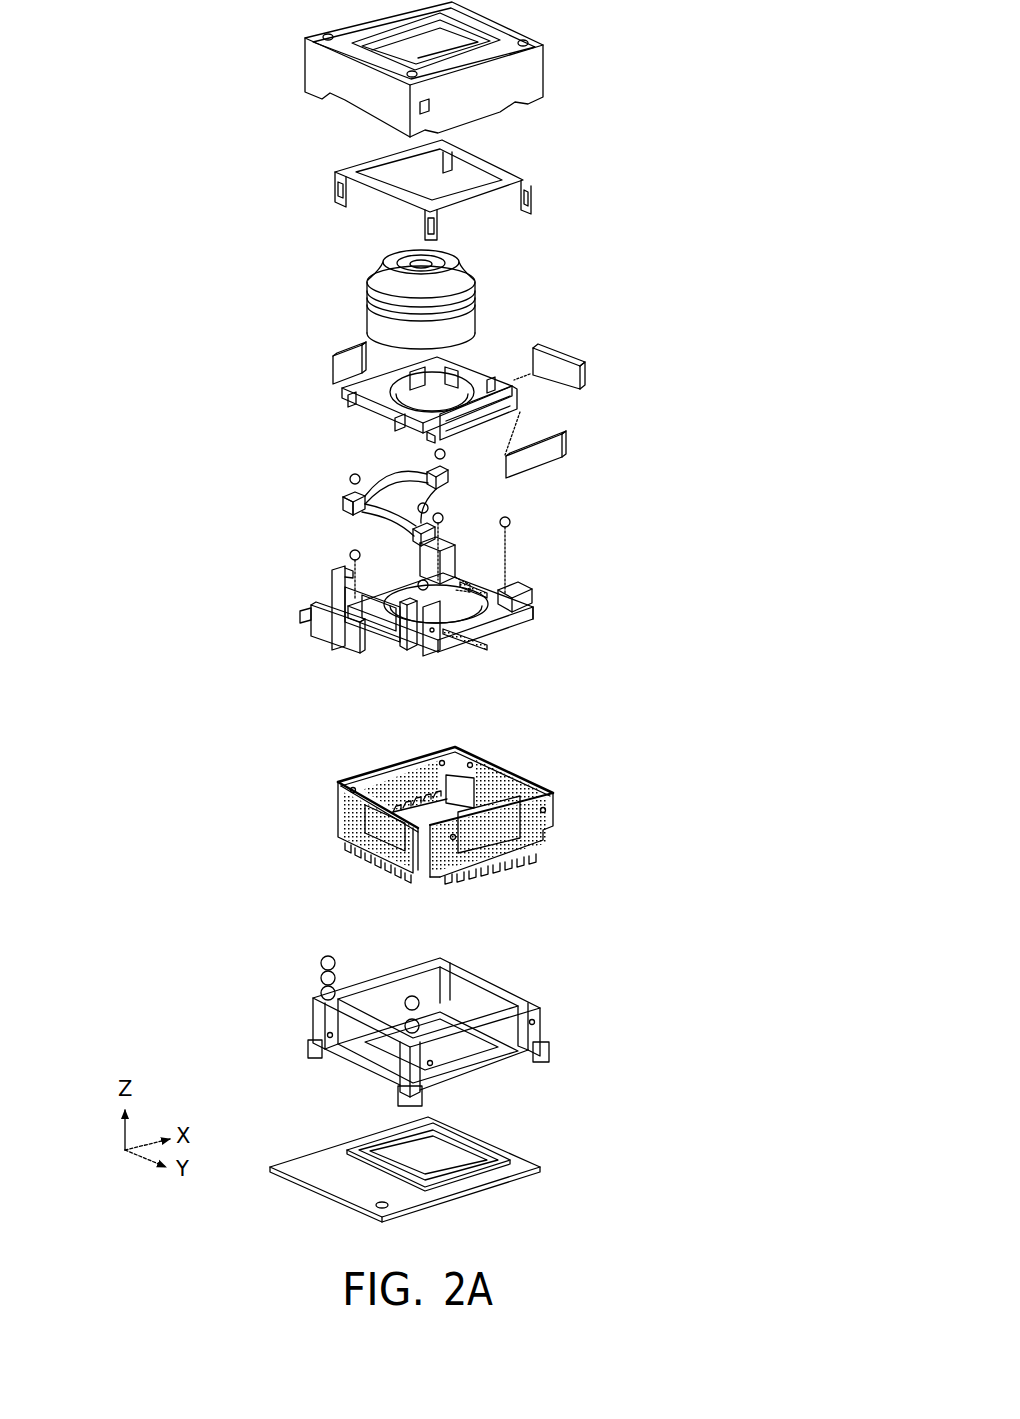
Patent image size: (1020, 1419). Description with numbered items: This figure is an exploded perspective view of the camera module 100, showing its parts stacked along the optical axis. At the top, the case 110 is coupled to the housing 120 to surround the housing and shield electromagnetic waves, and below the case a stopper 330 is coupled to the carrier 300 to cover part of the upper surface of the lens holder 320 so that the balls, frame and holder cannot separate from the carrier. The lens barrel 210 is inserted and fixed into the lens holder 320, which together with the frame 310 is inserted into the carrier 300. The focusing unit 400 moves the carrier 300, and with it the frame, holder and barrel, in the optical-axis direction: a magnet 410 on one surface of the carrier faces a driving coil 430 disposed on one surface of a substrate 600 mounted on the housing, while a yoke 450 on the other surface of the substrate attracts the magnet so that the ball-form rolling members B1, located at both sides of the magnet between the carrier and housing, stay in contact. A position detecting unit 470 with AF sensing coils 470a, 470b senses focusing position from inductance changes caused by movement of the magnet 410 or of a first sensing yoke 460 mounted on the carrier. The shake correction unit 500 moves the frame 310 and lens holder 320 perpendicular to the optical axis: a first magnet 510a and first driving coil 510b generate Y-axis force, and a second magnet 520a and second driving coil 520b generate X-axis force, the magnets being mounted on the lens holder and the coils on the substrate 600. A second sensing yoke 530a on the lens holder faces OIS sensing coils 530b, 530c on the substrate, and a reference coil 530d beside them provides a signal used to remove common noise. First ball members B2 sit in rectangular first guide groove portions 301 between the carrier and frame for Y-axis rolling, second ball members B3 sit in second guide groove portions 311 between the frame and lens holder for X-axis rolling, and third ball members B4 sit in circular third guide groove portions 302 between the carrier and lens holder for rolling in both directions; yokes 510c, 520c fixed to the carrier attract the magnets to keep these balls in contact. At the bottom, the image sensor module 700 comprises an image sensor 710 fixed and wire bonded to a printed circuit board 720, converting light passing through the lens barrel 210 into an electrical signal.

The camera module 100 is at (252, 106).
The case 110 is at (546, 72).
The housing 120 is at (320, 1013).
The lens barrel 210 is at (370, 315).
The carrier 300 is at (506, 585).
The first guide groove portions 301 is at (475, 538).
The third guide groove portions 302 is at (540, 613).
The frame 310 is at (337, 492).
The second guide groove portions 311 is at (345, 492).
The lens holder 320 is at (345, 411).
The stopper 330 is at (517, 173).
The focusing unit 400 is at (307, 616).
The magnet 410 is at (325, 640).
The driving coil 430 is at (390, 878).
The yoke 450 is at (392, 878).
The first sensing yoke 460 is at (299, 610).
The focus driver assembly 470 is at (285, 876).
The autofocusing sensing coil 470a is at (342, 842).
The autofocusing sensing coil 470b is at (345, 870).
The shake correction unit 500 is at (490, 388).
The first magnet 510a is at (565, 446).
The first driving coil 510b is at (490, 860).
The yoke 510c is at (503, 611).
The second magnet 520a is at (560, 350).
The second driving coil 520b is at (490, 770).
The yoke 520c is at (545, 589).
The second sensing yoke 530a is at (330, 353).
The OIS sensing coil 530b is at (375, 778).
The OIS sensing coil 530c is at (385, 764).
The reference coil 530d is at (430, 764).
The substrate 600 is at (434, 806).
The image sensor module 700 is at (460, 1169).
The image sensor 710 is at (495, 1158).
The printed circuit board 720 is at (480, 1193).
The rolling members B1 is at (410, 997).
The first ball members B2 is at (430, 510).
The second ball members B3 is at (353, 476).
The third ball members B4 is at (511, 520).